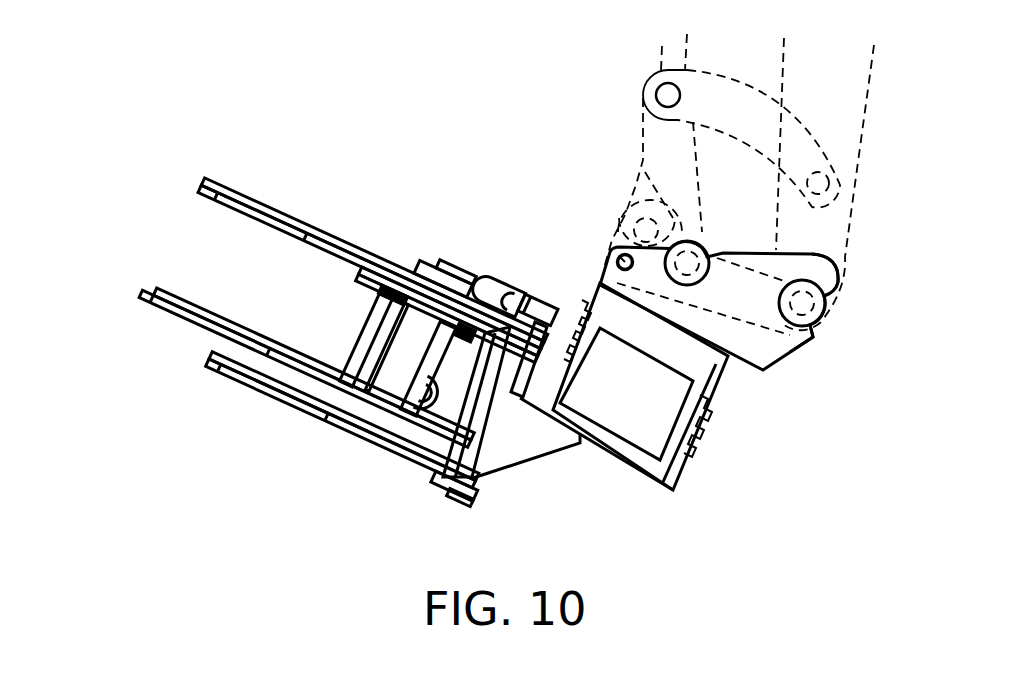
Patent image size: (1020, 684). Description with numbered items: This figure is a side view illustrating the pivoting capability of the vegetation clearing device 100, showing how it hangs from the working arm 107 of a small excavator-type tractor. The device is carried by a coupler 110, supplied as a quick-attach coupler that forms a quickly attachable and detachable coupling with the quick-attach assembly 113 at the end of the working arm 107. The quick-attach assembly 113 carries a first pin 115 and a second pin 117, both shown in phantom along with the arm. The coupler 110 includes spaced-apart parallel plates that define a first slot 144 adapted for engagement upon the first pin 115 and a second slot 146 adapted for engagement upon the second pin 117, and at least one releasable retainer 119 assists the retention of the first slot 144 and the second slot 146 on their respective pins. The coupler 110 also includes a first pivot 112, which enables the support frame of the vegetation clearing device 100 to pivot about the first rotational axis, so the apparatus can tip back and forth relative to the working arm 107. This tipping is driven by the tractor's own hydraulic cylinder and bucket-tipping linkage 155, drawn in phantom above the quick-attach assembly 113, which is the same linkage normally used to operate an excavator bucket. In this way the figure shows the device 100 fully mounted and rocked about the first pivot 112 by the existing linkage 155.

The vegetation clearing device 100 is at (185, 225).
The working arm 107 is at (873, 78).
The coupler 110 is at (764, 372).
The first pivot 112 is at (850, 345).
The quick-attach assembly 113 is at (620, 217).
The first pin 115 is at (843, 285).
The second pin 117 is at (640, 163).
The releasable retainer 119 is at (612, 256).
The first slot 144 is at (855, 310).
The second slot 146 is at (640, 215).
The bucket-tipping linkage 155 is at (641, 88).